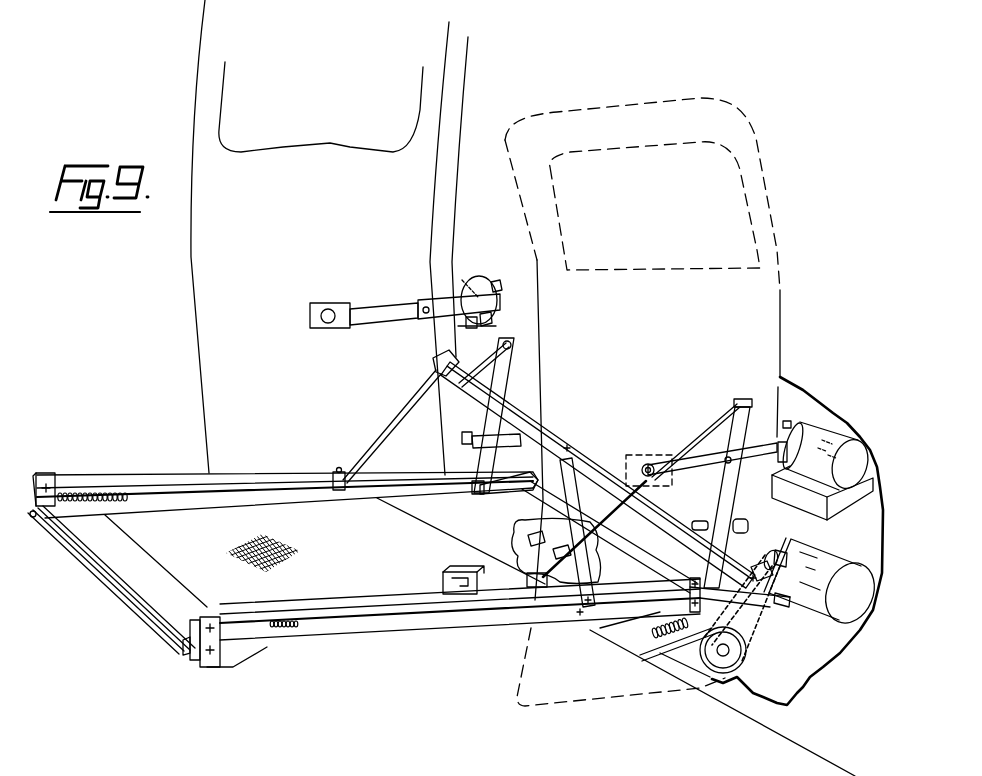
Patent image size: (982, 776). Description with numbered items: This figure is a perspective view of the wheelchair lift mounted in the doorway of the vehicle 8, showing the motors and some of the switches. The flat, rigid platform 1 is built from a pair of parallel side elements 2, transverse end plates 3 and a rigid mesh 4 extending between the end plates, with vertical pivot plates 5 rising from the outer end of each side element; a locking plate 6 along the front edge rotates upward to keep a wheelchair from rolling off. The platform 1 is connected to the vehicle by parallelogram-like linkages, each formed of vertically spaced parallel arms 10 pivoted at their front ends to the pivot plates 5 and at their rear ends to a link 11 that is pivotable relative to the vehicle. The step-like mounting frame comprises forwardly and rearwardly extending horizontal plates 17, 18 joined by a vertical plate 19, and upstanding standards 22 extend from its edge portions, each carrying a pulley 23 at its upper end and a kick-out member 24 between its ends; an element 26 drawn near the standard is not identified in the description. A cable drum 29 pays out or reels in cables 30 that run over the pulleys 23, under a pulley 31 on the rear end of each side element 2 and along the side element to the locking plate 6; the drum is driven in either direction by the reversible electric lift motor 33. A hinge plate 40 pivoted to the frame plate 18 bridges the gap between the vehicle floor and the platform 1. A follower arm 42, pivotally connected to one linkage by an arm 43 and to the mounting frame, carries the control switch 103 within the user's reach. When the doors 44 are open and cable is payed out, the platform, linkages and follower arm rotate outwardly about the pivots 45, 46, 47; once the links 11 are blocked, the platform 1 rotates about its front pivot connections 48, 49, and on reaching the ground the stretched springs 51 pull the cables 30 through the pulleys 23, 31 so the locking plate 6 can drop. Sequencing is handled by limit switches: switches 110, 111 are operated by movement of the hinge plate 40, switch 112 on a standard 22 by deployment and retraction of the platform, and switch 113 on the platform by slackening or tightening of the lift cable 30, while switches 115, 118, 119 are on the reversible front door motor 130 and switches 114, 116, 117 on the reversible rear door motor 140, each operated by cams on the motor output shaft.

The platform 1 is at (182, 535).
The side elements 2 is at (283, 500).
The end plates 3 is at (110, 555).
The rigid mesh 4 is at (300, 550).
The pivot plates 5 is at (57, 477).
The locking plate 6 is at (127, 592).
The vehicle 8 is at (817, 712).
The arms 10 is at (165, 478).
The link 11 is at (740, 645).
The horizontal plate 17 is at (593, 633).
The horizontal plate 18 is at (798, 608).
The vertical plate 19 is at (752, 640).
The standards 22 is at (523, 387).
The pulley 23 is at (511, 345).
The kick-out member 24 is at (522, 438).
The roller 26 is at (475, 440).
The cable drum 29 is at (660, 660).
The cables 30 is at (425, 428).
The pulley 31 is at (337, 470).
The electric motor 33 is at (827, 542).
The hinge plate 40 is at (475, 509).
The follower arm 42 is at (588, 458).
The arm 43 is at (598, 527).
The doors 44 is at (191, 265).
The pivot 45 is at (652, 633).
The pivot 46 is at (770, 612).
The pivot 47 is at (758, 565).
The front pivot connection 48 is at (183, 642).
The front pivot connection 49 is at (188, 653).
The springs 51 is at (93, 494).
The control switch 103 is at (433, 365).
The limit switch 110 is at (527, 542).
The limit switch 111 is at (548, 552).
The limit switch 112 is at (500, 372).
The limit switch 113 is at (462, 592).
The limit switch 114 is at (498, 284).
The limit switch 115 is at (800, 394).
The limit switch 116 is at (493, 324).
The limit switch 117 is at (453, 322).
The limit switch 118 is at (843, 432).
The limit switch 119 is at (777, 433).
The front door motor 130 is at (867, 445).
The rear door motor 140 is at (466, 277).